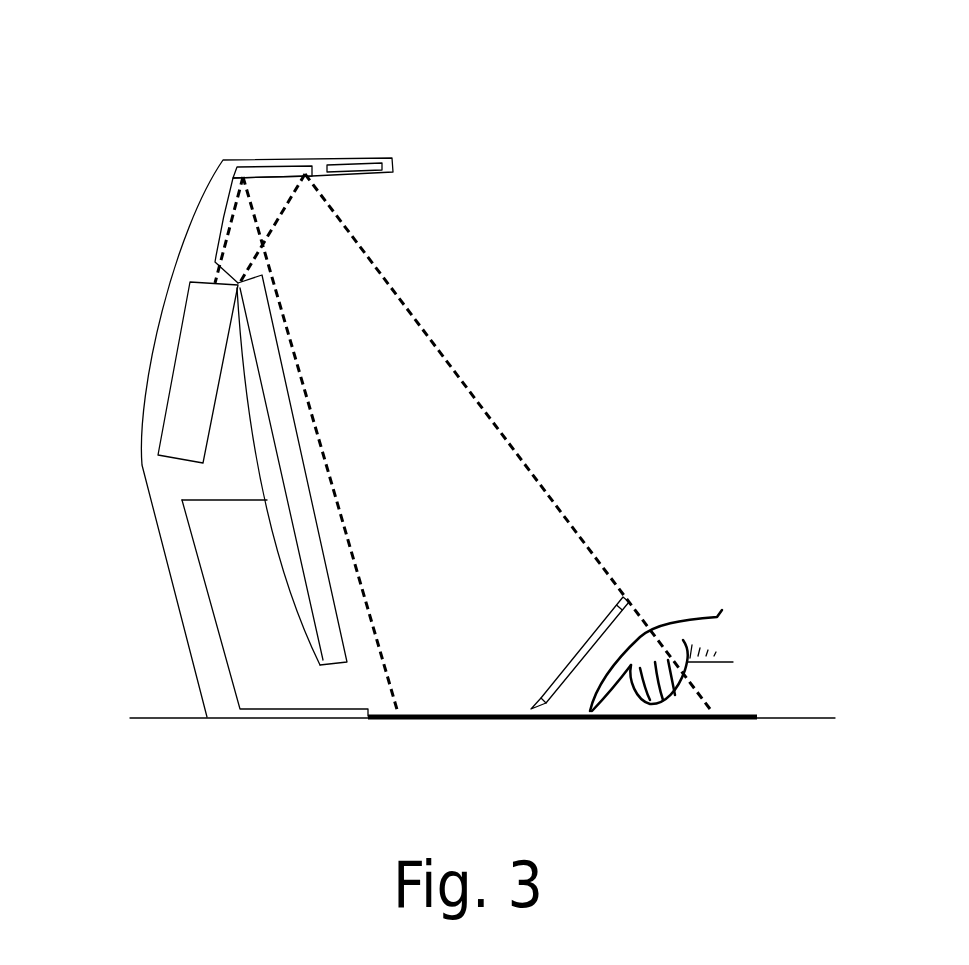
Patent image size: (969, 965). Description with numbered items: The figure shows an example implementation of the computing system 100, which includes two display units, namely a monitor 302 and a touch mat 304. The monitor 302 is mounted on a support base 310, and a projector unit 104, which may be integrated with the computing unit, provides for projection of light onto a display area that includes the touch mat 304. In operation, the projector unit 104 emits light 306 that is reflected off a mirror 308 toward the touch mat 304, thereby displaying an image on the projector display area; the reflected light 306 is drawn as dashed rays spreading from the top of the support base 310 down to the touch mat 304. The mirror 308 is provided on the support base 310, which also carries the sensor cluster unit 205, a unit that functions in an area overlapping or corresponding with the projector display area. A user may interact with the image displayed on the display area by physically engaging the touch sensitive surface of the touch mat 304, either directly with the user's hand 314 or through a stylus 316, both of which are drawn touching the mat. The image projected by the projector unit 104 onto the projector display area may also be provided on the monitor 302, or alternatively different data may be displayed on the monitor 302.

The computing system 100 is at (438, 67).
The projector unit 104 is at (175, 357).
The sensor cluster unit 205 is at (376, 158).
The monitor 302 is at (287, 587).
The touch mat 304 is at (533, 720).
The light 306 is at (418, 320).
The mirror 308 is at (257, 160).
The support base 310 is at (208, 187).
The user's hand 314 is at (720, 612).
The stylus 316 is at (587, 637).